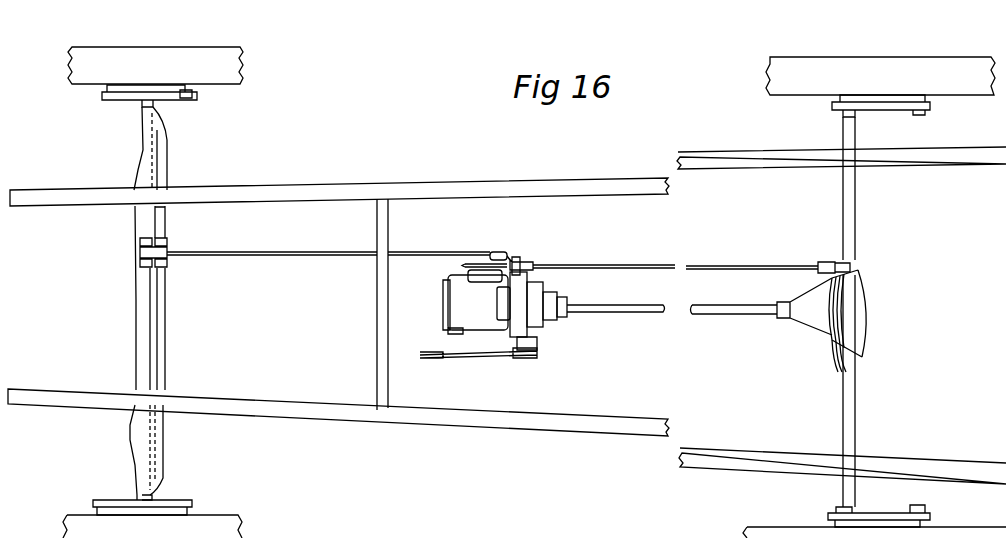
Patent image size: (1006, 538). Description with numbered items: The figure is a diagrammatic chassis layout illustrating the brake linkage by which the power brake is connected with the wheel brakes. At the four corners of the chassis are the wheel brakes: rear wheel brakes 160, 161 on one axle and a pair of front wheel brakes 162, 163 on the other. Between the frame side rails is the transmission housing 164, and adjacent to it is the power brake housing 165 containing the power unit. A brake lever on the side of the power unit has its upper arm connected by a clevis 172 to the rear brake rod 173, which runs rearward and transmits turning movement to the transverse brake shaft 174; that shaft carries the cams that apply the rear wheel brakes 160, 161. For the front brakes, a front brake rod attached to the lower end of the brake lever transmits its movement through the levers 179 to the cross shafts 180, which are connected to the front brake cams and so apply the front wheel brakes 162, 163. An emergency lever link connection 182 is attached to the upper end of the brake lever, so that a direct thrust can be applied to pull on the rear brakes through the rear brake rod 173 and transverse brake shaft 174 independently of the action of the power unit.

The rear wheel brake 160 is at (888, 98).
The rear wheel brake 161 is at (898, 495).
The front wheel brake 162 is at (190, 96).
The front wheel brake 163 is at (163, 503).
The transmission housing 164 is at (455, 309).
The power brake housing 165 is at (537, 317).
The clevis 172 is at (523, 260).
The rear brake rod 173 is at (737, 248).
The transverse brake shaft 174 is at (845, 438).
The levers 179 is at (167, 244).
The cross shafts 180 is at (163, 173).
The emergency lever link connection 182 is at (476, 262).